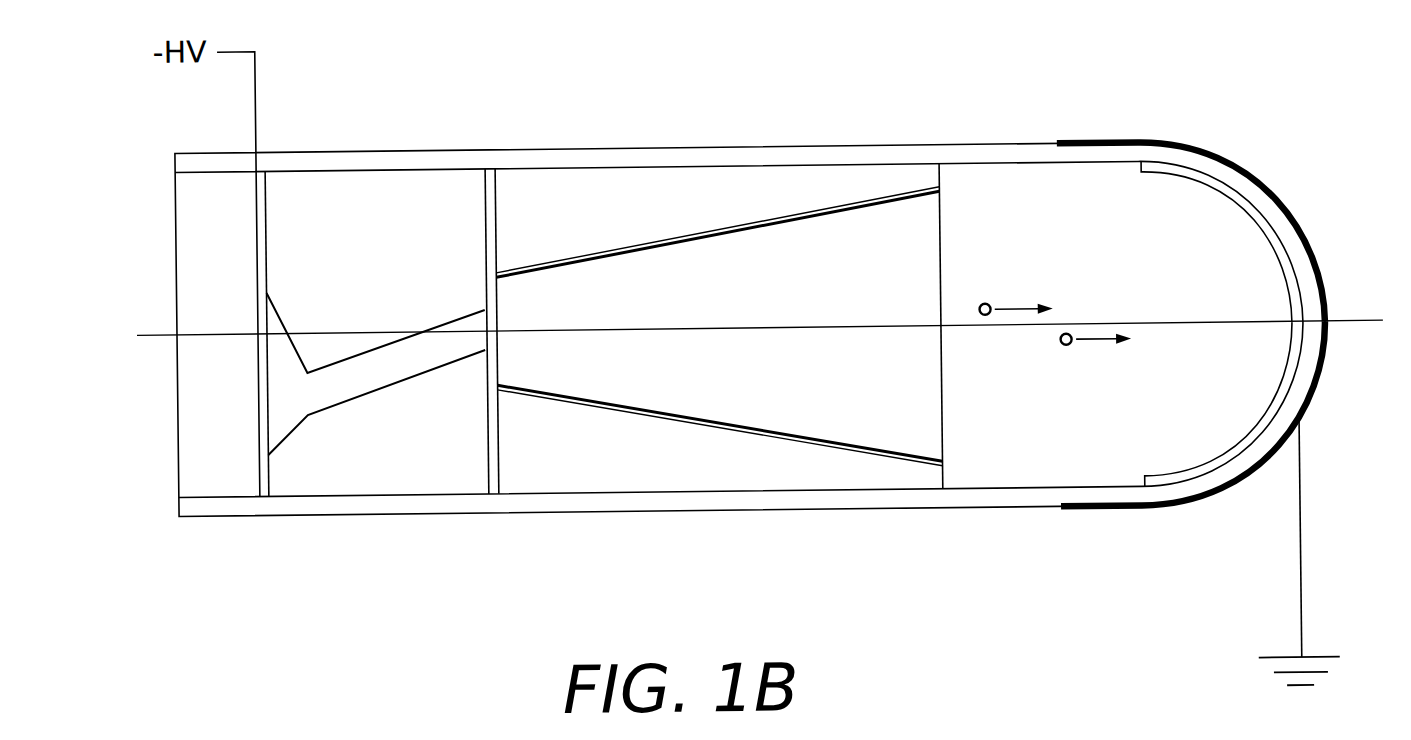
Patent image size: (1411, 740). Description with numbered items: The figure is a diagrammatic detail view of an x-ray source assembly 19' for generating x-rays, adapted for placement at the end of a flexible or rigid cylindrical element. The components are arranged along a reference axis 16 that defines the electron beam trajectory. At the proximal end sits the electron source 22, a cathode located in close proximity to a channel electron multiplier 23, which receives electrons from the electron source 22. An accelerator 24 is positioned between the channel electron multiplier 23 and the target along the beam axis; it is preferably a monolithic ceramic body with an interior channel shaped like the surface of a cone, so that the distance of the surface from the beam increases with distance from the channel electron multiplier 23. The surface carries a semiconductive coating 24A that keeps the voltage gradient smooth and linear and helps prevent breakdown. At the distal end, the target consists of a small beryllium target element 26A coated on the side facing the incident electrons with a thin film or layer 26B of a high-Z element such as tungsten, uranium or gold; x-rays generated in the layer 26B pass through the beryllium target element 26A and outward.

The reference axis 16 is at (1352, 332).
The x-ray source assembly 19' is at (750, 299).
The electron source 22 is at (196, 435).
The channel electron multiplier 23 is at (416, 471).
The accelerator 24 is at (646, 471).
The semiconductive coating 24A is at (799, 449).
The beryllium target element 26A is at (1207, 159).
The high-Z film layer 26B is at (1214, 474).